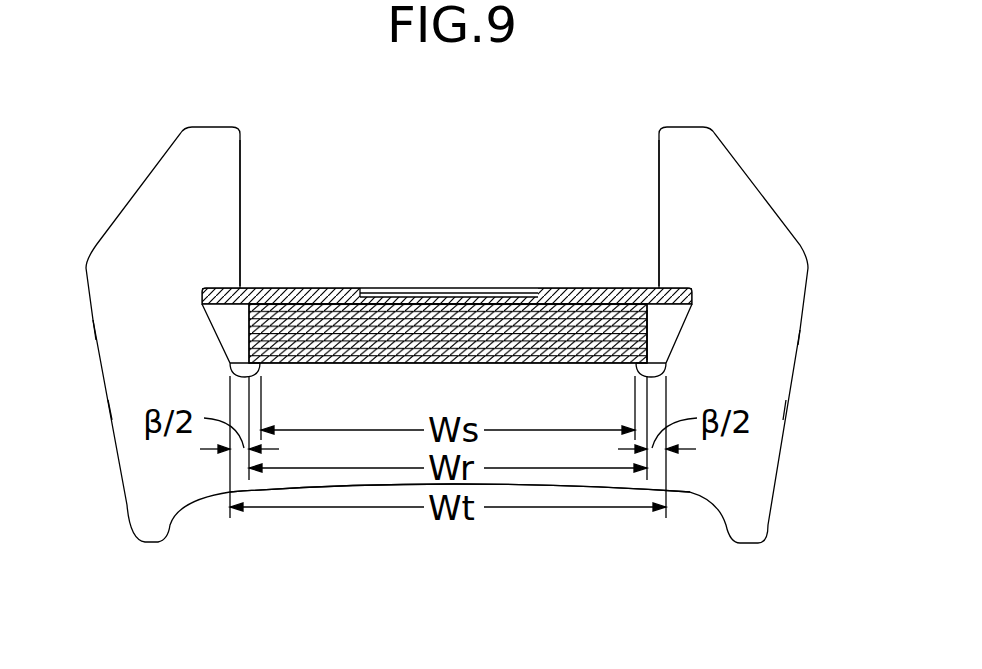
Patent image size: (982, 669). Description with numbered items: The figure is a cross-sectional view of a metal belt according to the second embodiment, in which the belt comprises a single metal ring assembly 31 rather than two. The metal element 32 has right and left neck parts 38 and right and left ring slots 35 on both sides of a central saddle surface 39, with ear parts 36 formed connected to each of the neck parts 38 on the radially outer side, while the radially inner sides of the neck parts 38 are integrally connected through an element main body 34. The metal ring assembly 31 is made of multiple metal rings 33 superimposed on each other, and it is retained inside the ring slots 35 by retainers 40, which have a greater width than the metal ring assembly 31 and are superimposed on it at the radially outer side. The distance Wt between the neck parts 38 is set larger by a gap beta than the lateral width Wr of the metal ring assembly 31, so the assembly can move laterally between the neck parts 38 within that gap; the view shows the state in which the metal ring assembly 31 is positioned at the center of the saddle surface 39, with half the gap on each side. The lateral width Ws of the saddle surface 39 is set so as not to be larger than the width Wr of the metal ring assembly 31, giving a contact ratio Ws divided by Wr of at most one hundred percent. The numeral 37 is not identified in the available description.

The metal ring assembly 31 is at (494, 362).
The metal element 32 is at (737, 143).
The metal rings 33 is at (647, 355).
The element main body 34 is at (697, 488).
The ring slots 35 is at (227, 313).
The ear parts 36 is at (232, 168).
The outer wall 37 is at (108, 430).
The neck parts 38 is at (125, 325).
The saddle surface 39 is at (403, 362).
The retainers 40 is at (588, 290).